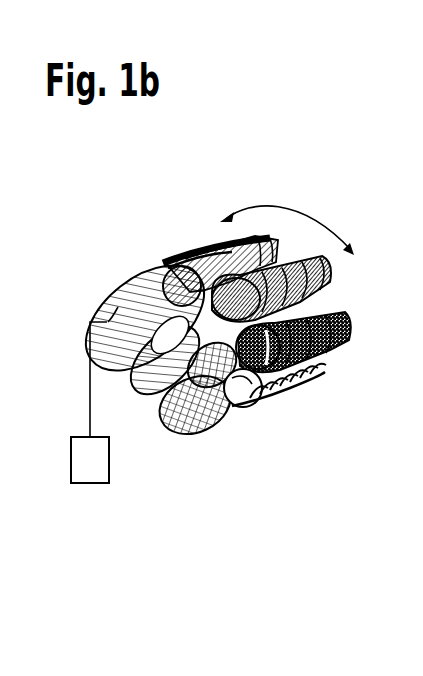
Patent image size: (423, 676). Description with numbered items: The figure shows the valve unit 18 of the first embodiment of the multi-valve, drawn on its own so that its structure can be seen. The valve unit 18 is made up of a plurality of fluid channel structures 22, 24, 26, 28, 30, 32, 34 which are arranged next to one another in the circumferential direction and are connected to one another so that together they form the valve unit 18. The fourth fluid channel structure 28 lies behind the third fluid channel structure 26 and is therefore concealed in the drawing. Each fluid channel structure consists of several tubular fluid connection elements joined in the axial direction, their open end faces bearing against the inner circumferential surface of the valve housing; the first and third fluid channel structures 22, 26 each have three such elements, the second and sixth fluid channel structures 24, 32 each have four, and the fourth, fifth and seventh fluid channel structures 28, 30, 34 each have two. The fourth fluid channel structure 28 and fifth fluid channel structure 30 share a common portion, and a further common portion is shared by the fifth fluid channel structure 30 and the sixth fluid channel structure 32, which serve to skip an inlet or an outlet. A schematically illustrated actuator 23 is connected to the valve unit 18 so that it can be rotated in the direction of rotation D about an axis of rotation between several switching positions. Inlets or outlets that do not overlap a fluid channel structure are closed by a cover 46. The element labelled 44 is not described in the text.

The valve unit 18 is at (240, 442).
The first fluid channel structure 22 is at (338, 334).
The actuator 23 is at (90, 478).
The second fluid channel structure 24 is at (335, 275).
The third fluid channel structure 26 is at (250, 240).
The fourth fluid channel structure 28 is at (222, 243).
The fifth fluid channel structure 30 is at (133, 310).
The sixth fluid channel structure 32 is at (190, 434).
The seventh fluid channel structure 34 is at (283, 398).
The edge element 44 is at (230, 251).
The cover 46 is at (300, 395).
The direction of rotation D is at (307, 212).